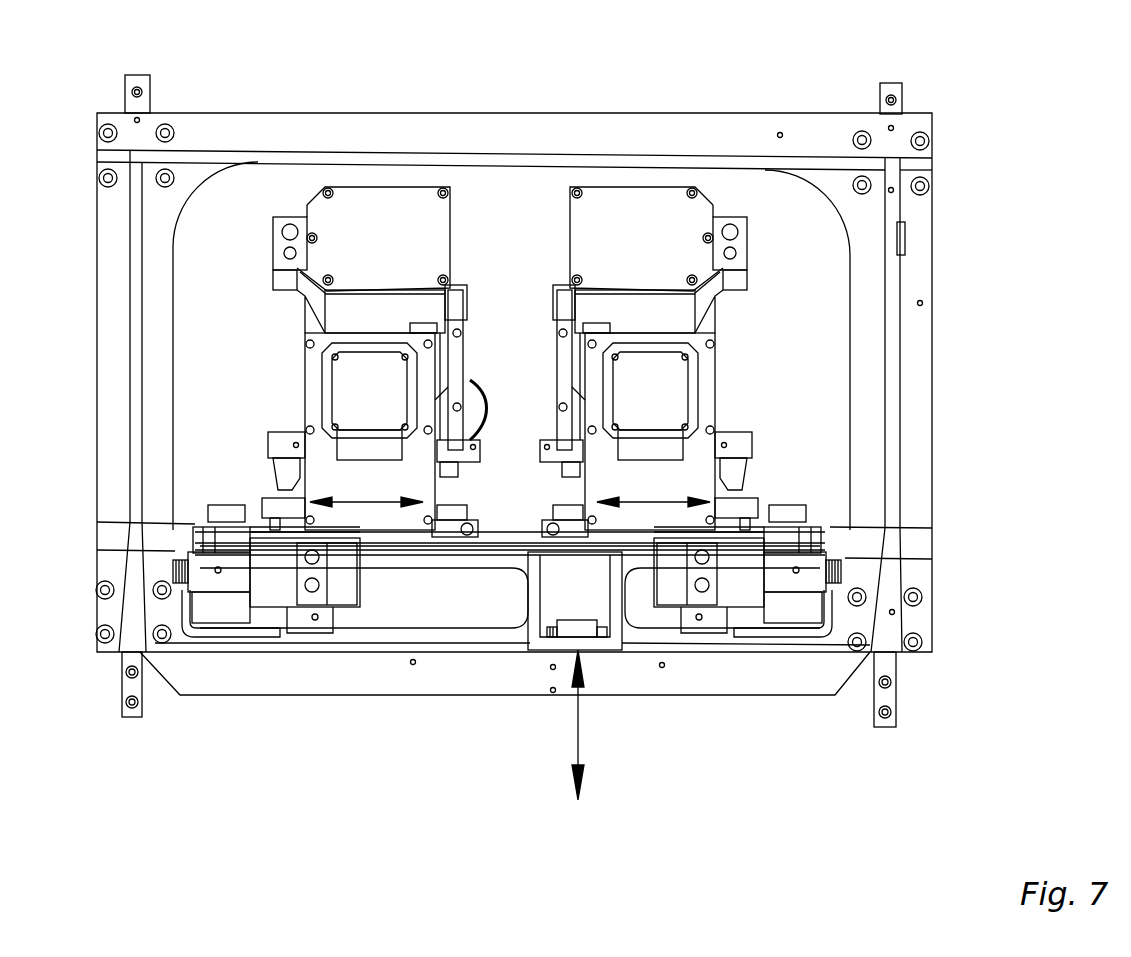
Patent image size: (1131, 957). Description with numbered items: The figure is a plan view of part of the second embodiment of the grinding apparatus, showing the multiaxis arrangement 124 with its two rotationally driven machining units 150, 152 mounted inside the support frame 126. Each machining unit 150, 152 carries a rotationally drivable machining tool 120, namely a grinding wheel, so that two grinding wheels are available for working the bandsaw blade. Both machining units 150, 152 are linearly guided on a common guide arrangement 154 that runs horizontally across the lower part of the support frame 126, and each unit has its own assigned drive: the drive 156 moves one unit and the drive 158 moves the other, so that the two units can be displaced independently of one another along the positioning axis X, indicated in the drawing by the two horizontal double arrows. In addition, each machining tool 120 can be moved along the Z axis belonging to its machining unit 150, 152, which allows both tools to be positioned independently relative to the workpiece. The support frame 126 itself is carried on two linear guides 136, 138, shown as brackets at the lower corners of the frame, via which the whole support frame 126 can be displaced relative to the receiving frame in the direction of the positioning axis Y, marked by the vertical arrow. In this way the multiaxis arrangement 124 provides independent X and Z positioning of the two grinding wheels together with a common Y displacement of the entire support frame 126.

The machining tool 120 is at (483, 425).
The multiaxis arrangement 124 is at (510, 210).
The support frame 126 is at (800, 130).
The linear guide 136 is at (878, 700).
The linear guide 138 is at (128, 688).
The machining unit 150 is at (683, 198).
The machining unit 152 is at (385, 213).
The guide arrangement 154 is at (500, 536).
The drive 156 is at (742, 593).
The drive 158 is at (268, 590).